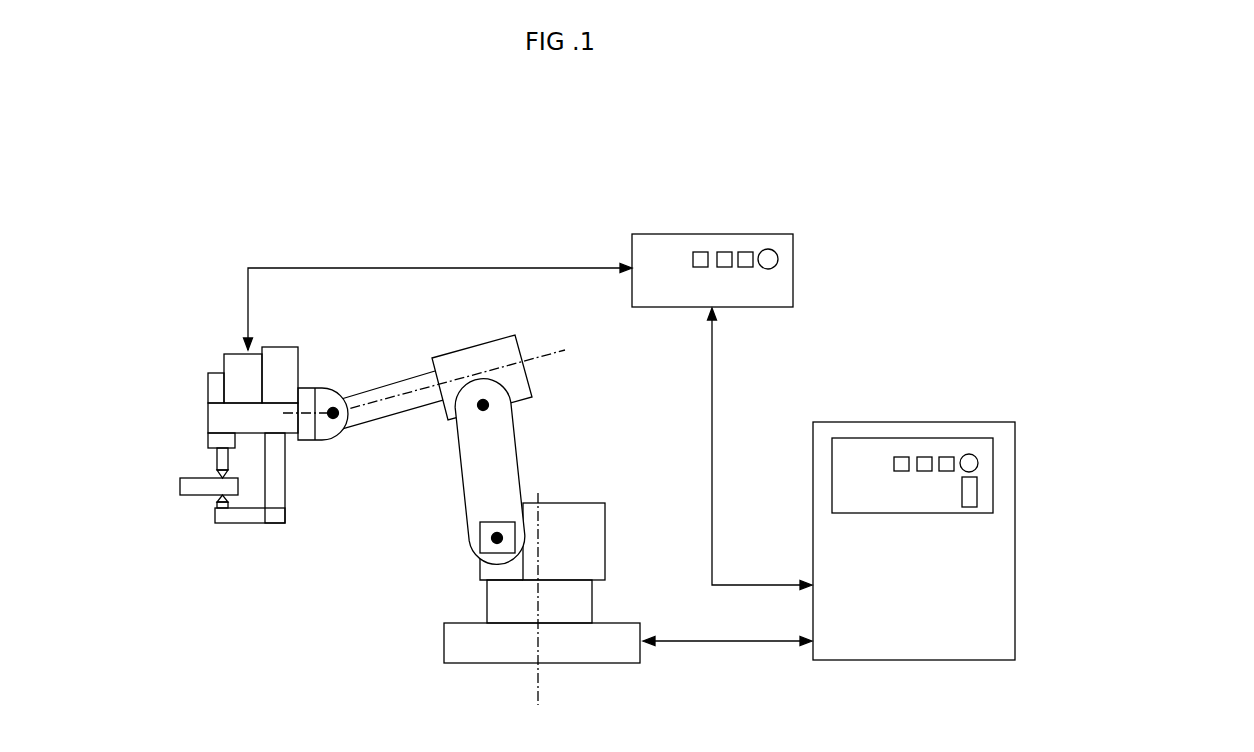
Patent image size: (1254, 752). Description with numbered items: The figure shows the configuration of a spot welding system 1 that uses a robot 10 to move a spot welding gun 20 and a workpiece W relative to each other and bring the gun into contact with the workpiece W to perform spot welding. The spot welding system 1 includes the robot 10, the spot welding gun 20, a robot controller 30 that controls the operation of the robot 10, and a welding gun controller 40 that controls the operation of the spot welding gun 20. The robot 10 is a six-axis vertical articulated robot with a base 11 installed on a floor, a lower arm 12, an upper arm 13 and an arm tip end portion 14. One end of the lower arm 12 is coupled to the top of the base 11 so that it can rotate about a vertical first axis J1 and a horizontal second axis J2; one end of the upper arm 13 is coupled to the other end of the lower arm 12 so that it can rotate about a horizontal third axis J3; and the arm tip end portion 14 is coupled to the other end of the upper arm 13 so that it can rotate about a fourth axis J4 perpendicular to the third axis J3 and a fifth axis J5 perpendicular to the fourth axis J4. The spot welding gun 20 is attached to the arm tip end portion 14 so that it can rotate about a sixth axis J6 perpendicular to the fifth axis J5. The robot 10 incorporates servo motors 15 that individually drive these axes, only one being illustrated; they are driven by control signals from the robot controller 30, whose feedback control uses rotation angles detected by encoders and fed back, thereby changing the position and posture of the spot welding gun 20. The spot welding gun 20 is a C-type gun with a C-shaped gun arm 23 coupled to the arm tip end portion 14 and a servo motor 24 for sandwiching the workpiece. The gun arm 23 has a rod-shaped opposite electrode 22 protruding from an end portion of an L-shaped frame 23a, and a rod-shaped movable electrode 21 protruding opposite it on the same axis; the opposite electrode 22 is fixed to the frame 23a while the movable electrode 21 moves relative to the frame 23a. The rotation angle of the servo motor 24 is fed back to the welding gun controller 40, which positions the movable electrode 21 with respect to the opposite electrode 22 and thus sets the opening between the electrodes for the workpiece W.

The spot welding system 1 is at (960, 123).
The robot 10 is at (562, 458).
The base 11 is at (592, 600).
The lower arm 12 is at (463, 473).
The upper arm 13 is at (415, 402).
The arm tip end portion 14 is at (333, 390).
The servo motor 15 is at (478, 535).
The first axis J1 is at (540, 687).
The second axis J2 is at (487, 542).
The third axis J3 is at (487, 407).
The fourth axis J4 is at (538, 357).
The fifth axis J5 is at (337, 421).
The sixth axis J6 is at (285, 415).
The spot welding gun 20 is at (142, 375).
The movable electrode 21 is at (217, 460).
The opposite electrode 22 is at (215, 508).
The gun arm 23 is at (302, 489).
The frame 23a is at (285, 512).
The servo motor 24 is at (227, 354).
The robot controller 30 is at (1015, 503).
The welding gun controller 40 is at (652, 232).
The workpiece W is at (180, 490).